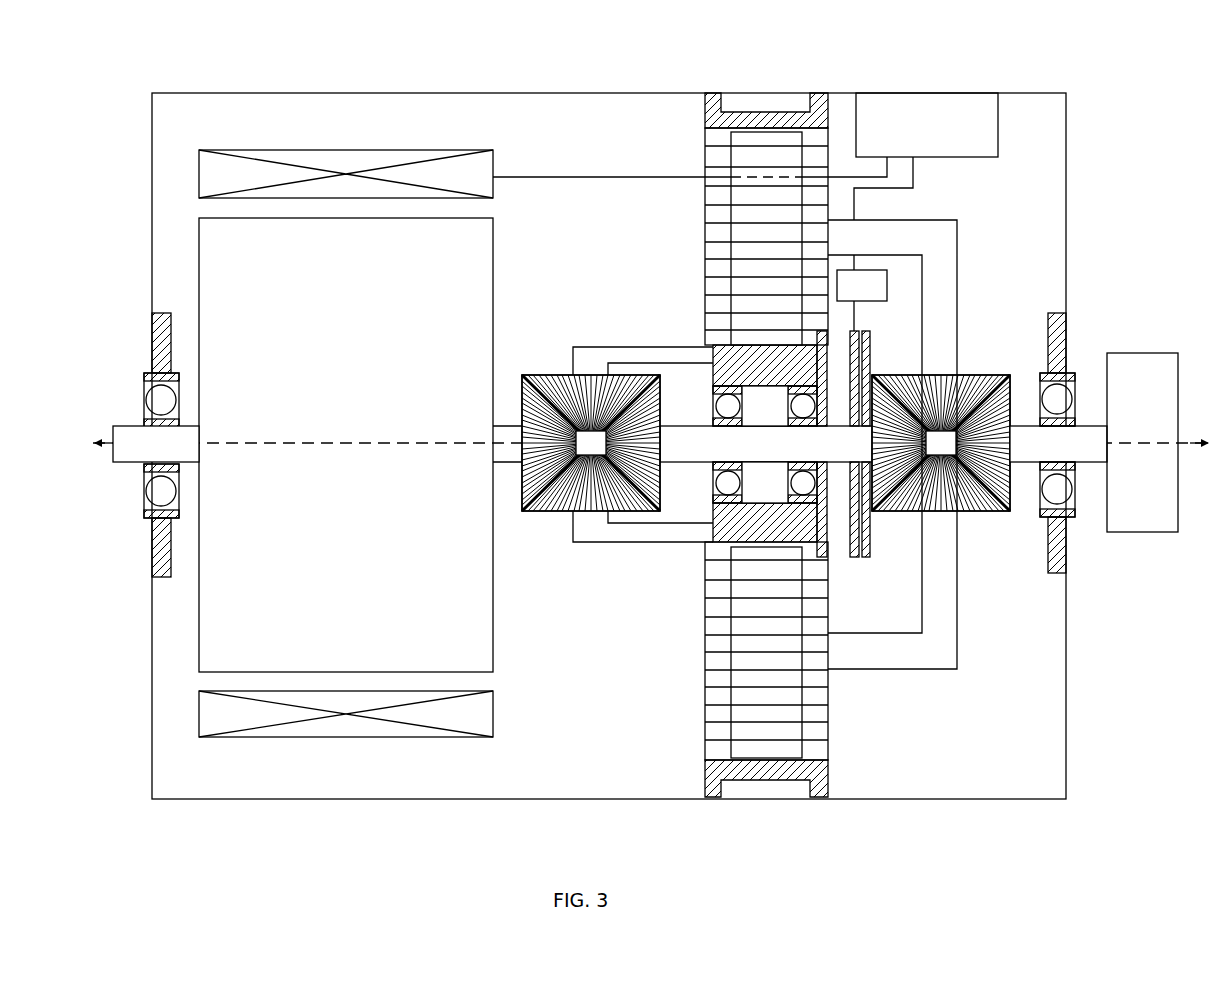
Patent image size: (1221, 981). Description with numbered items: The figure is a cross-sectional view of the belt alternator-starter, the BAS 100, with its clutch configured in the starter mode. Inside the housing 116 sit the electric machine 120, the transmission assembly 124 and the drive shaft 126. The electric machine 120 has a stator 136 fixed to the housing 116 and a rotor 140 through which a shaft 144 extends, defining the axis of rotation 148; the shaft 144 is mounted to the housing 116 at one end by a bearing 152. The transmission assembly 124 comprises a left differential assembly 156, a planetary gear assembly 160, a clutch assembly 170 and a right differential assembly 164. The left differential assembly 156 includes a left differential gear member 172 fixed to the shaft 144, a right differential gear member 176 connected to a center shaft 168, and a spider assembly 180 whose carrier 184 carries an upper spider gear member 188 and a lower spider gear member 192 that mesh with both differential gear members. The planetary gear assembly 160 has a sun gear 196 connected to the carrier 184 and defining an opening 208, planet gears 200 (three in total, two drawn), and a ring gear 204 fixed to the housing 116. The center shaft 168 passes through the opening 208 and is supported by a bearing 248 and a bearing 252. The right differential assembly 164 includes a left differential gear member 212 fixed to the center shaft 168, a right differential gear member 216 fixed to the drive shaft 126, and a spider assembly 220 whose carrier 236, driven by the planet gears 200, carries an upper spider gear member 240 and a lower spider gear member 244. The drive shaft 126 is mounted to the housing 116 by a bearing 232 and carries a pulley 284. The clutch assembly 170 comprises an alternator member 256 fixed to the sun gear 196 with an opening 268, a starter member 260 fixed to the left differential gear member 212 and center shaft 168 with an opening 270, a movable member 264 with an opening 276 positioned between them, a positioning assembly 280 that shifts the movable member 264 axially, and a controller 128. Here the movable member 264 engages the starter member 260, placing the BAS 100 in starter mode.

The BAS 100 is at (112, 143).
The housing 116 is at (212, 800).
The electric machine 120 is at (346, 394).
The transmission assembly 124 is at (705, 420).
The drive shaft 126 is at (1083, 437).
The controller 128 is at (926, 156).
The stator 136 is at (220, 170).
The rotor 140 is at (346, 445).
The shaft 144 is at (128, 423).
The axis of rotation 148 is at (247, 443).
The bearing 152 is at (145, 477).
The left differential assembly 156 is at (546, 426).
The planetary gear assembly 160 is at (702, 646).
The right differential assembly 164 is at (953, 432).
The center shaft 168 is at (672, 462).
The clutch assembly 170 is at (867, 485).
The left differential gear member 172 is at (524, 411).
The right differential gear member 176 is at (690, 395).
The spider assembly 180 is at (692, 444).
The carrier 184 is at (587, 347).
The upper spider gear member 188 is at (533, 377).
The lower spider gear member 192 is at (543, 512).
The sun gear 196 is at (712, 533).
The planet gears 200 is at (705, 205).
The ring gear 204 is at (705, 118).
The opening 208 is at (716, 483).
The left differential gear member 212 is at (873, 512).
The right differential gear member 216 is at (1009, 512).
The spider assembly 220 is at (922, 430).
The bearing 232 is at (1129, 607).
The carrier 236 is at (892, 444).
The upper spider gear member 240 is at (977, 375).
The lower spider gear member 244 is at (968, 512).
The bearing 248 is at (765, 406).
The bearing 252 is at (765, 482).
The alternator member 256 is at (822, 557).
The starter member 260 is at (863, 558).
The movable member 264 is at (853, 558).
The opening 268 is at (815, 431).
The opening 270 is at (862, 431).
The opening 276 is at (847, 428).
The positioning assembly 280 is at (862, 293).
The pulley 284 is at (1142, 442).